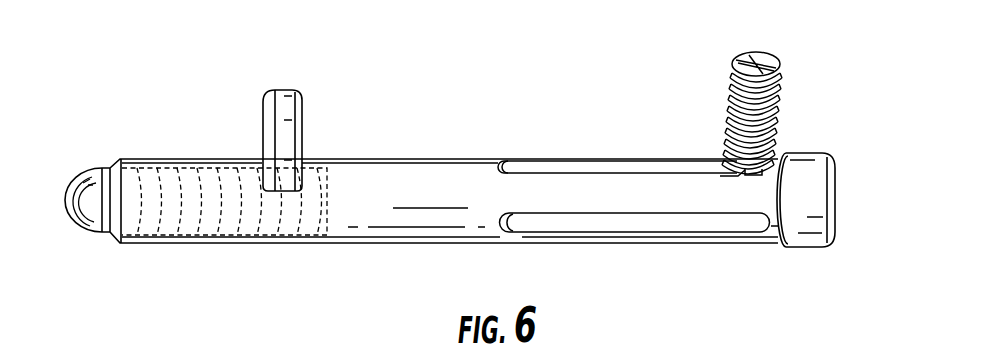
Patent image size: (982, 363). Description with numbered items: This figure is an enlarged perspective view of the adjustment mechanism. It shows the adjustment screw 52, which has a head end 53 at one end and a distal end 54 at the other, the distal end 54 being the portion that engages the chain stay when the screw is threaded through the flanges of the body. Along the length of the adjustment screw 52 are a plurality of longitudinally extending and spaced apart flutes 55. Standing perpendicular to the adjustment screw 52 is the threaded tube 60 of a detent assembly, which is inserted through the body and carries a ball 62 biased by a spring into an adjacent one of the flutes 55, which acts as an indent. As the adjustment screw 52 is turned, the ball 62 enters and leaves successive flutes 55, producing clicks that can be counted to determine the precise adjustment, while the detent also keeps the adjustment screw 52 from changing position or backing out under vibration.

The adjustment screw 52 is at (425, 113).
The head end 53 is at (831, 184).
The distal end 54 is at (85, 176).
The flutes 55 is at (547, 162).
The threaded tube 60 is at (777, 108).
The ball 62 is at (720, 176).